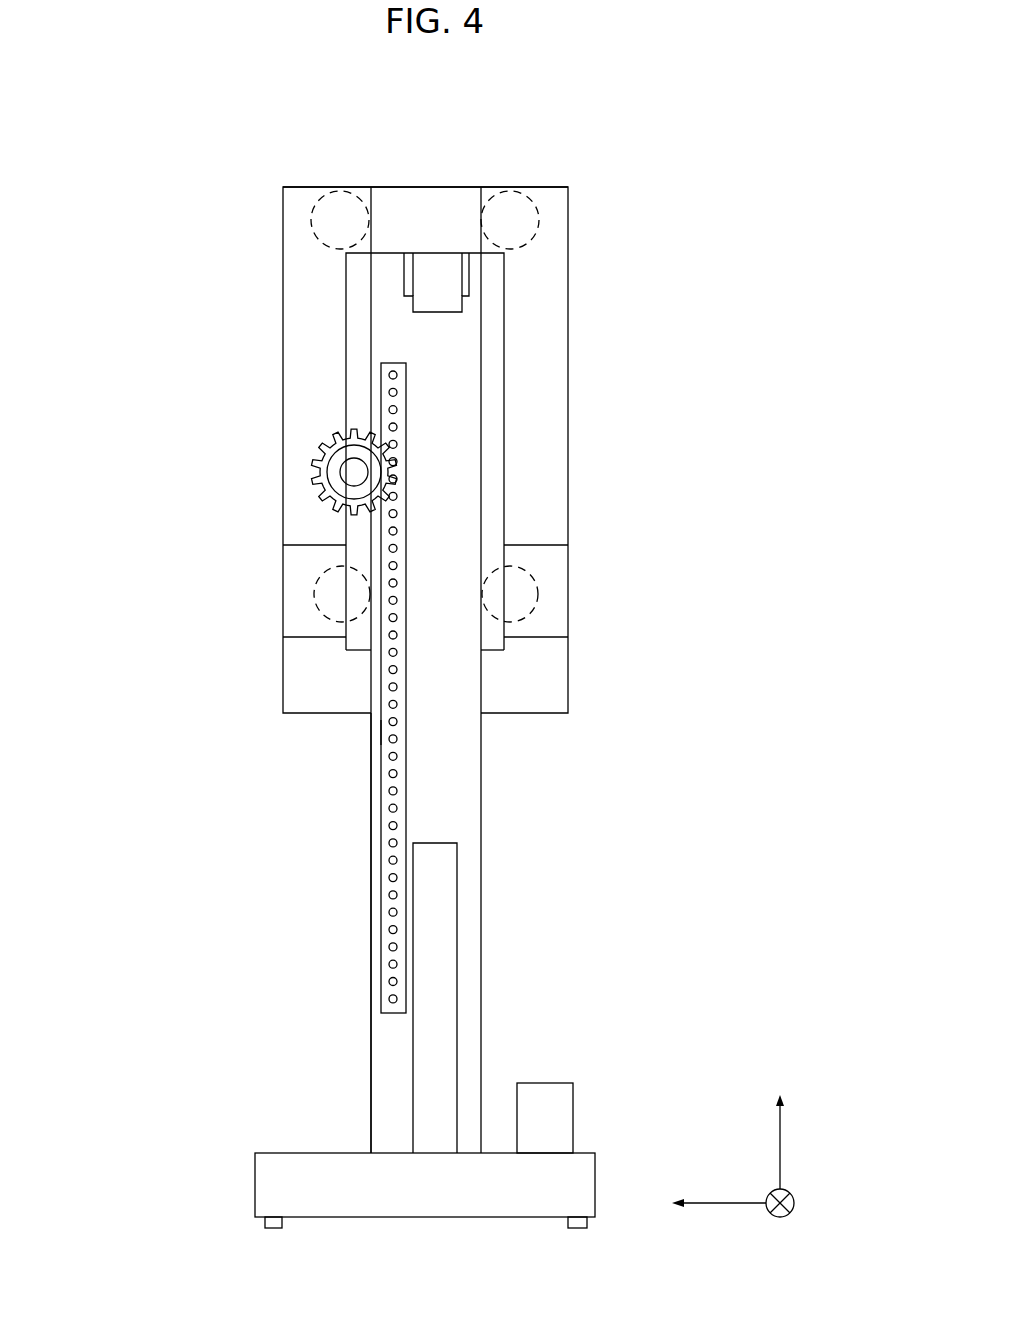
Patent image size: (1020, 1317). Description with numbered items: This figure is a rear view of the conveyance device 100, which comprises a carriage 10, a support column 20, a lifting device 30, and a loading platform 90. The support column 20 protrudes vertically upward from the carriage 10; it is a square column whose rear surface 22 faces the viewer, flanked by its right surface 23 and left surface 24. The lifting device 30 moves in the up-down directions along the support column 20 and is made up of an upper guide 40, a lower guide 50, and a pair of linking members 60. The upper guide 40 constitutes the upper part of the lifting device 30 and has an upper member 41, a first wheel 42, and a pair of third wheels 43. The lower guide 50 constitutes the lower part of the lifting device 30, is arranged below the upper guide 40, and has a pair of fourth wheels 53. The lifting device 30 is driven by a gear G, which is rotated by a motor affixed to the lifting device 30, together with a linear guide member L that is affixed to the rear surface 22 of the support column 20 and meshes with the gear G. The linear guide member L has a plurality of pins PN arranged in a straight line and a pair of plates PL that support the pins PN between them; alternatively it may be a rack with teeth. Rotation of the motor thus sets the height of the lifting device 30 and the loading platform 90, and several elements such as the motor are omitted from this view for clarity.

The conveyance device 100 is at (105, 87).
The carriage 10 is at (318, 1162).
The support column 20 is at (435, 670).
The rear surface 22 is at (447, 793).
The right surface 23 is at (370, 990).
The left surface 24 is at (483, 995).
The lifting device 30 is at (162, 200).
The upper guide 40 is at (447, 327).
The upper member 41 is at (427, 187).
The first wheel 42 is at (437, 297).
The third wheels 43 is at (320, 200).
The lower guide 50 is at (407, 618).
The fourth wheels 53 is at (318, 608).
The linking members 60 is at (305, 413).
The loading platform 90 is at (305, 695).
The gear G is at (315, 466).
The linear guide member L is at (329, 688).
The plates PL is at (385, 733).
The pins PN is at (388, 843).